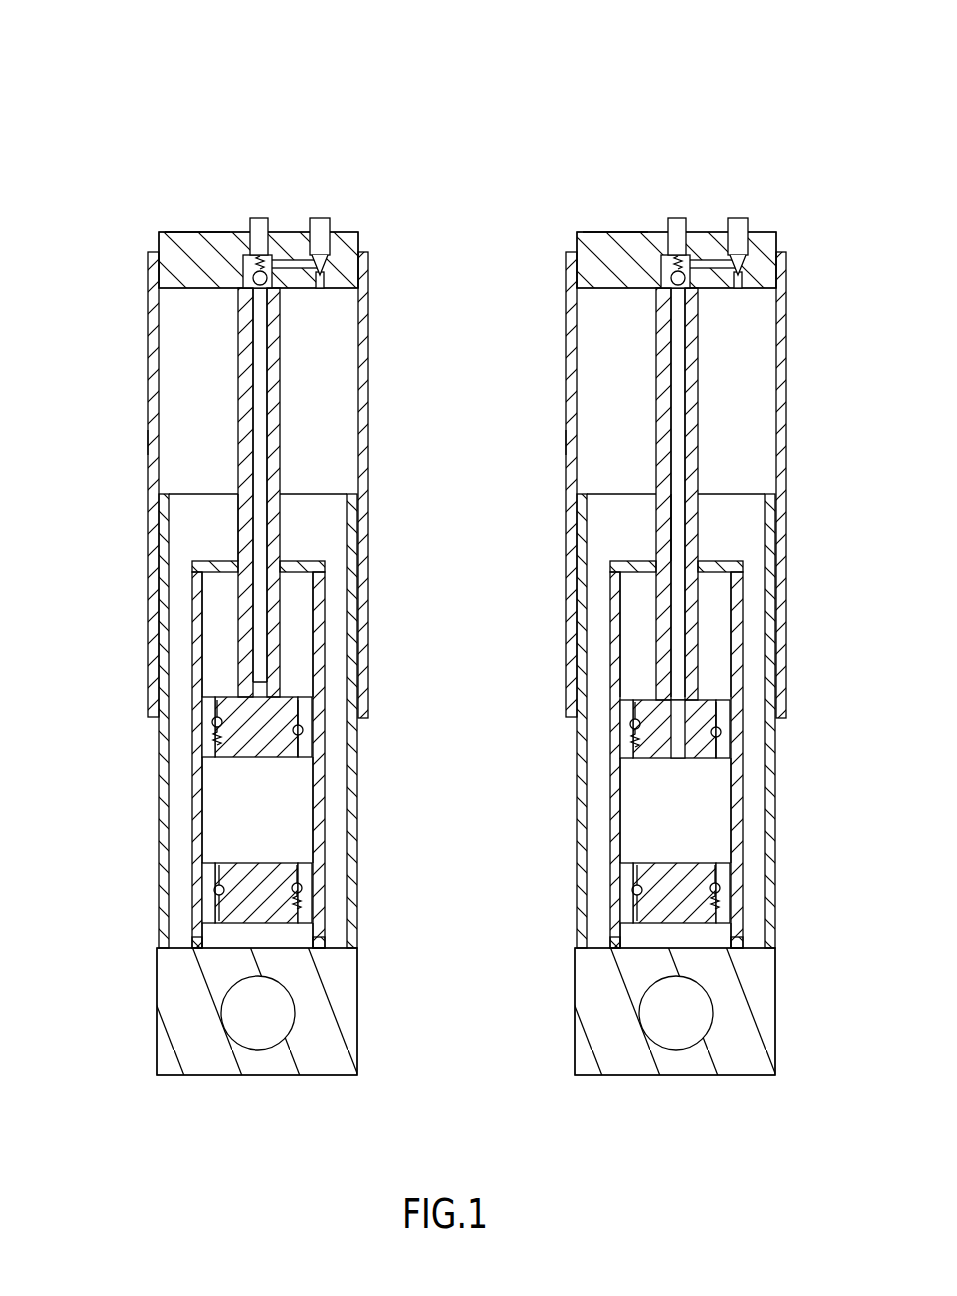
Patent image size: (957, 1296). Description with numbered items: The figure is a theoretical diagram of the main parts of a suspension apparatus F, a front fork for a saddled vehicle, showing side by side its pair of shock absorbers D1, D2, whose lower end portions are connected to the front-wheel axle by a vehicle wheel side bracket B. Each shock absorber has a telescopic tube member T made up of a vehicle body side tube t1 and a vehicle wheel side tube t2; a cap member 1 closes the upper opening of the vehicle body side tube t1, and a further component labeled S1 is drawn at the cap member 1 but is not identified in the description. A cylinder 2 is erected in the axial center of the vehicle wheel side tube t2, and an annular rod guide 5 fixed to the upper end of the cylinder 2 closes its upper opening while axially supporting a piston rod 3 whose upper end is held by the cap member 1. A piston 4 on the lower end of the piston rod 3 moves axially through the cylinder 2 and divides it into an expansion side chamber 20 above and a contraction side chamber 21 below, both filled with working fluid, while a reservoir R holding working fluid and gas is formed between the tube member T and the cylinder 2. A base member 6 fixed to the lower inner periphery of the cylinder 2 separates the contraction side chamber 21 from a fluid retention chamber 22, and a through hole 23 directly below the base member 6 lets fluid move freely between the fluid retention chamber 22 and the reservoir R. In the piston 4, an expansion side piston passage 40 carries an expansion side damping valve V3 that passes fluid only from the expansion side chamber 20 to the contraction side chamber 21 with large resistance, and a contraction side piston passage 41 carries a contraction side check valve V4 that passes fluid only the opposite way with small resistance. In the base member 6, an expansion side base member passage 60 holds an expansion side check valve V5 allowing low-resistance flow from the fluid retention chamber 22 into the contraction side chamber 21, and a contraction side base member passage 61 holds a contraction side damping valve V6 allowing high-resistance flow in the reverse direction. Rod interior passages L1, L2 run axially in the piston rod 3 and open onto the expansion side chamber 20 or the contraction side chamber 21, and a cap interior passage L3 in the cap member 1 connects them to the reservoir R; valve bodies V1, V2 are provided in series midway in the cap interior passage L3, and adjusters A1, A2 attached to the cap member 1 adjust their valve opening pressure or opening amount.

The suspension apparatus F is at (460, 546).
The shock absorber D1 is at (334, 185).
The shock absorber D2 is at (754, 185).
The cap member 1 is at (441, 414).
The seal S1 is at (196, 240).
The adjuster A1 is at (250, 220).
The adjuster A2 is at (327, 220).
The cap interior passage L3 is at (295, 240).
The tube member T is at (146, 345).
The valve body V1 is at (256, 287).
The valve body V2 is at (525, 305).
The reservoir R is at (182, 406).
The vehicle body side tube t1 is at (152, 440).
The piston rod 3 is at (276, 468).
The rod interior passage L1 is at (255, 518).
The rod interior passage L2 is at (582, 527).
The rod guide 5 is at (325, 562).
The expansion side chamber 20 is at (300, 630).
The expansion side damping valve V3 is at (213, 722).
The contraction side piston passage 41 is at (300, 714).
The piston 4 is at (455, 724).
The contraction side check valve V4 is at (305, 735).
The expansion side piston passage 40 is at (213, 745).
The contraction side chamber 21 is at (236, 827).
The vehicle wheel side tube t2 is at (156, 810).
The cylinder 2 is at (322, 803).
The expansion side base member passage 60 is at (197, 868).
The contraction side damping valve V6 is at (305, 875).
The base member 6 is at (461, 920).
The contraction side base member passage 61 is at (310, 905).
The expansion side check valve V5 is at (205, 895).
The through hole 23 is at (322, 937).
The fluid retention chamber 22 is at (110, 1046).
The vehicle wheel side bracket B is at (354, 1027).